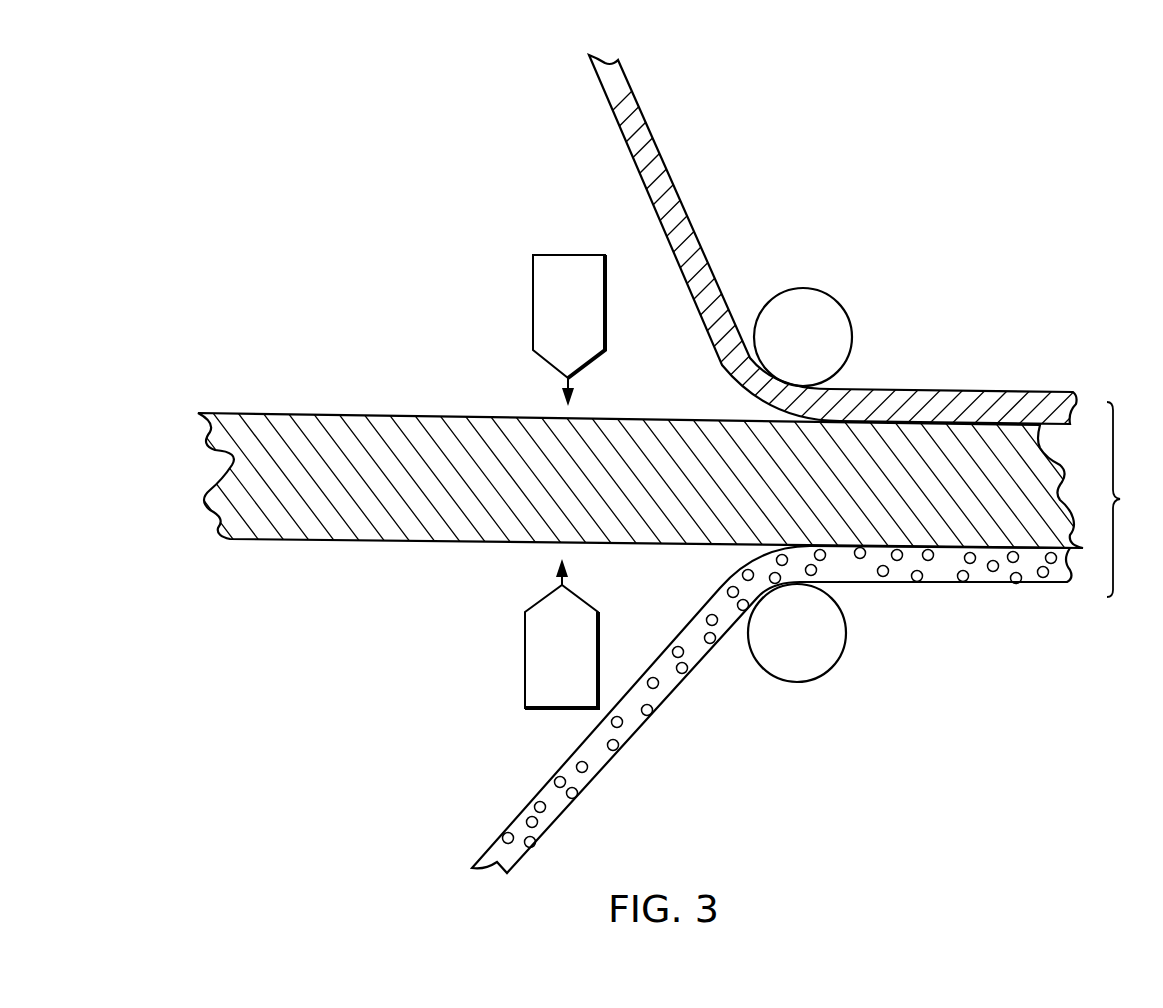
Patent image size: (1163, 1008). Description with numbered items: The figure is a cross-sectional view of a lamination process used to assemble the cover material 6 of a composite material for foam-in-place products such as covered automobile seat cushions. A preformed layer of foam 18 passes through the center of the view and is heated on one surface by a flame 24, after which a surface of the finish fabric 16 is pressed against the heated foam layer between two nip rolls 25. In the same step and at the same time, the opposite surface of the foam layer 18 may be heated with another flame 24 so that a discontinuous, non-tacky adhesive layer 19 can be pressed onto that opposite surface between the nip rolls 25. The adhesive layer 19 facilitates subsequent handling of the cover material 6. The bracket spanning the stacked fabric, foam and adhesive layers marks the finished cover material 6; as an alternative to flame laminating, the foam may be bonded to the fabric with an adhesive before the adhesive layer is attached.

The cover material 6 is at (1124, 499).
The finish fabric 16 is at (743, 138).
The foam layer 18 is at (212, 490).
The discontinuous adhesive layer 19 is at (494, 872).
The flame 24 is at (565, 481).
The nip rolls 25 is at (852, 337).